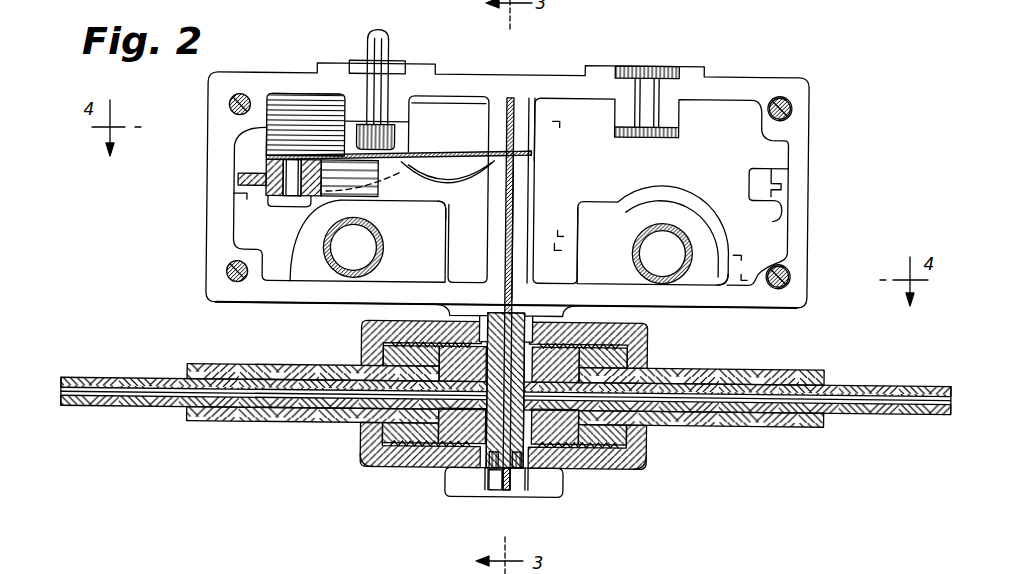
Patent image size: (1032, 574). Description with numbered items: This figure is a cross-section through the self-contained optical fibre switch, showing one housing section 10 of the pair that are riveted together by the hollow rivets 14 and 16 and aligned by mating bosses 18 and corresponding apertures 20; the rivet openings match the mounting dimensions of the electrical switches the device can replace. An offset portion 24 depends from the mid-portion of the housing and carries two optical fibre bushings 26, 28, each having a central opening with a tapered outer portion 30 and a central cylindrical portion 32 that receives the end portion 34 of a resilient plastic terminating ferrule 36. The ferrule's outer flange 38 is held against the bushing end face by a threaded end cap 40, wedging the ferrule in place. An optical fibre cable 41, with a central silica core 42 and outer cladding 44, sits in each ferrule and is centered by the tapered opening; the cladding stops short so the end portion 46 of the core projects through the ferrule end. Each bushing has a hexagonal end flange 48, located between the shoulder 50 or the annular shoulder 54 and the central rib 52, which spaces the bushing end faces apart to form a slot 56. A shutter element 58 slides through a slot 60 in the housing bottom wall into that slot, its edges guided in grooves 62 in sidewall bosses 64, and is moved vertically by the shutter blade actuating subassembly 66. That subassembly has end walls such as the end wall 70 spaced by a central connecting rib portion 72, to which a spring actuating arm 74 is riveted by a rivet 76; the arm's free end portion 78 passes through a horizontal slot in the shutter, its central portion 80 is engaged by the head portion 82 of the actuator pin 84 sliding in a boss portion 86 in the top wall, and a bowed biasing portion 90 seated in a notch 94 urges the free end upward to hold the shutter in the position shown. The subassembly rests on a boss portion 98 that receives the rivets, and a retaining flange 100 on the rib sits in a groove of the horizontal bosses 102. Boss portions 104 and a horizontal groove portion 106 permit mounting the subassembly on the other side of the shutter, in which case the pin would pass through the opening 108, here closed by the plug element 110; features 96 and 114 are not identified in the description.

The housing section 10 is at (728, 78).
The hollow rivet 14 is at (384, 249).
The hollow rivet 16 is at (633, 251).
The mating boss 18 is at (228, 104).
The aperture 20 is at (786, 100).
The offset portion 24 is at (447, 487).
The optical fibre bushing 26 is at (580, 446).
The optical fibre bushing 28 is at (463, 445).
The tapered outer portion 30 is at (428, 441).
The central cylindrical portion 32 is at (460, 345).
The end portion of ferrule 34 is at (483, 469).
The optical fibre cable terminating ferrule 36 is at (220, 430).
The outer flange 38 is at (363, 457).
The threaded end cap 40 is at (366, 337).
The optical fibre cable 41 is at (139, 382).
The central silica core 42 is at (60, 400).
The outer cladding 44 is at (124, 410).
The end portion of core 46 is at (488, 336).
The hexagonal end flange 48 is at (511, 218).
The inwardly extending shoulder 50 is at (520, 481).
The central inwardly extending rib 52 is at (495, 481).
The inwardly extending annular shoulder 54 is at (488, 475).
The slot 56 is at (508, 474).
The shutter element 58 is at (512, 192).
The slot 60 is at (512, 278).
The groove 62 is at (509, 98).
The boss 64 is at (533, 118).
The shutter blade actuating subassembly 66 is at (291, 108).
The end wall 70 is at (305, 96).
The central connecting rib portion 72 is at (262, 198).
The spring actuating arm 74 is at (445, 153).
The rivet 76 is at (289, 200).
The outer free end portion 78 is at (533, 158).
The central portion of spring arm 80 is at (287, 136).
The head portion 82 is at (355, 142).
The switch actuator pin 84 is at (387, 44).
The boss portion 86 is at (408, 104).
The bowed spring arm biasing portion 90 is at (445, 183).
The notch 94 is at (434, 155).
The block corner 96 is at (440, 201).
The boss portion 98 is at (309, 246).
The retaining flange 100 is at (245, 176).
The horizontal boss 102 is at (236, 207).
The boss portion 104 is at (714, 280).
The horizontal groove portion 106 is at (790, 219).
The opening 108 is at (634, 90).
The plug element 110 is at (657, 77).
The element 114 is at (835, 7).